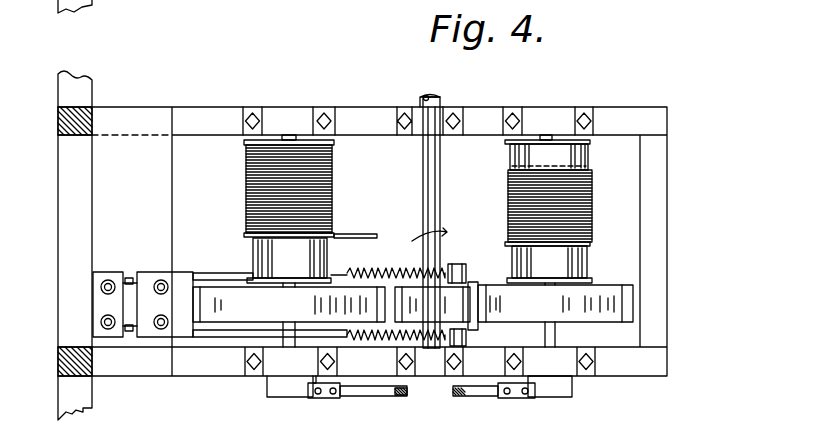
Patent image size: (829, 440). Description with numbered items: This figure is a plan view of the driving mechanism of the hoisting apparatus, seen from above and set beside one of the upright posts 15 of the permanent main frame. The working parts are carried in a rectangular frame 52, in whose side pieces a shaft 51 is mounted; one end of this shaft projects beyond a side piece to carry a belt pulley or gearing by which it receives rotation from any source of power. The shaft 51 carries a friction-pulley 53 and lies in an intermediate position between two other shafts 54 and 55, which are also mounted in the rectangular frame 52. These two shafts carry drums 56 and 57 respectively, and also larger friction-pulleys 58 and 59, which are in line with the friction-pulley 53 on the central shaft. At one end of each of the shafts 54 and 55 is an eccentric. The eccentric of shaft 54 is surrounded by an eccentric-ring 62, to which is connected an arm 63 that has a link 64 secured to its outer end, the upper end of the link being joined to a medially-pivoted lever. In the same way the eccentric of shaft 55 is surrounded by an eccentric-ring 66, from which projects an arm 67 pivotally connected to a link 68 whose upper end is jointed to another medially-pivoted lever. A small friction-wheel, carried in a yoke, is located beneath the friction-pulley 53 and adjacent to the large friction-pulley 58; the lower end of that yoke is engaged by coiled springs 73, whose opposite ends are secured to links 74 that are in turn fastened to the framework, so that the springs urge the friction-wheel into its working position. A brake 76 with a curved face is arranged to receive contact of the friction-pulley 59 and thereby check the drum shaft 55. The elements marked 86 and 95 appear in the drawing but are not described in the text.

The upright posts 15 is at (58, 358).
The shaft 51 is at (440, 207).
The rectangular frame 52 is at (652, 378).
The friction-pulley 53 is at (436, 305).
The shaft 54 is at (545, 135).
The shaft 55 is at (284, 135).
The drum 56 is at (588, 266).
The drum 57 is at (327, 261).
The friction-pulley 58 is at (555, 303).
The friction-pulley 59 is at (289, 304).
The eccentric-ring 62 is at (562, 396).
The arm 63 is at (493, 398).
The link 64 is at (457, 397).
The eccentric-ring 66 is at (280, 392).
The arm 67 is at (357, 396).
The link 68 is at (401, 396).
The coiled springs 73 is at (385, 273).
The links 74 is at (221, 275).
The brake 76 is at (183, 280).
The arm 86 is at (352, 235).
The spool head 95 is at (590, 171).